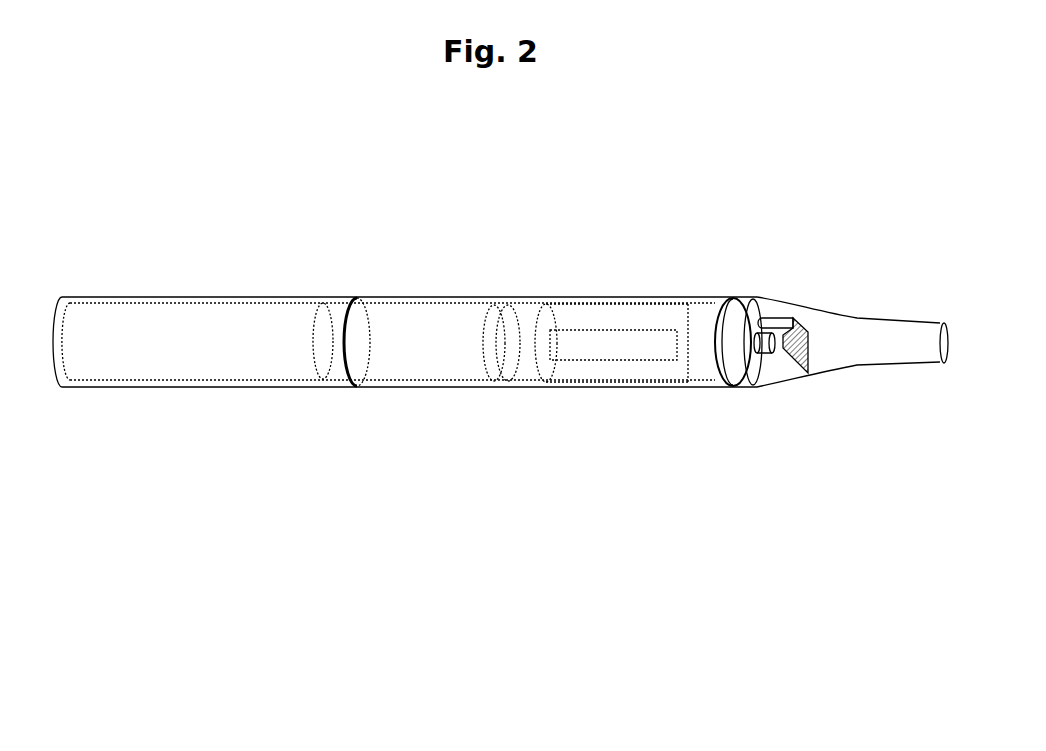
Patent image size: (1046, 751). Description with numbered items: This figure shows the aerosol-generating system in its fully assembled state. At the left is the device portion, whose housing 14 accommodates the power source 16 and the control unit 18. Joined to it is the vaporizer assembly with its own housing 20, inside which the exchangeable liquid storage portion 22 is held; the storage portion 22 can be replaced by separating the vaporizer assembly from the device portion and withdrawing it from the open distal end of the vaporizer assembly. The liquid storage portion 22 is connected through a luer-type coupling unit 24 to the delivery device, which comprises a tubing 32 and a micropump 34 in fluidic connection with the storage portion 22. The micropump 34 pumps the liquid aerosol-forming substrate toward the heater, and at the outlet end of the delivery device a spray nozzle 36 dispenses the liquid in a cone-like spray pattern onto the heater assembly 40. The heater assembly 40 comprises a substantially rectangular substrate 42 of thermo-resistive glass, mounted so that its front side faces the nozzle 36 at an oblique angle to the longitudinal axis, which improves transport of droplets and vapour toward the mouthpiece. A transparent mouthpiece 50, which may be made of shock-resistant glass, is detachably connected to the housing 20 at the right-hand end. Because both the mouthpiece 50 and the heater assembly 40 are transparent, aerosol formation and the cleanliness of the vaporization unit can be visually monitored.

The housing 14 is at (185, 389).
The power source 16 is at (113, 367).
The control unit 18 is at (327, 357).
The housing 20 is at (433, 389).
The storage portion 22 is at (398, 363).
The coupling unit 24 is at (513, 363).
The tubing 32 is at (597, 345).
The micropump 34 is at (702, 357).
The spray nozzle 36 is at (763, 345).
The heater assembly 40 is at (808, 368).
The substrate 42 is at (777, 355).
The mouthpiece 50 is at (910, 352).